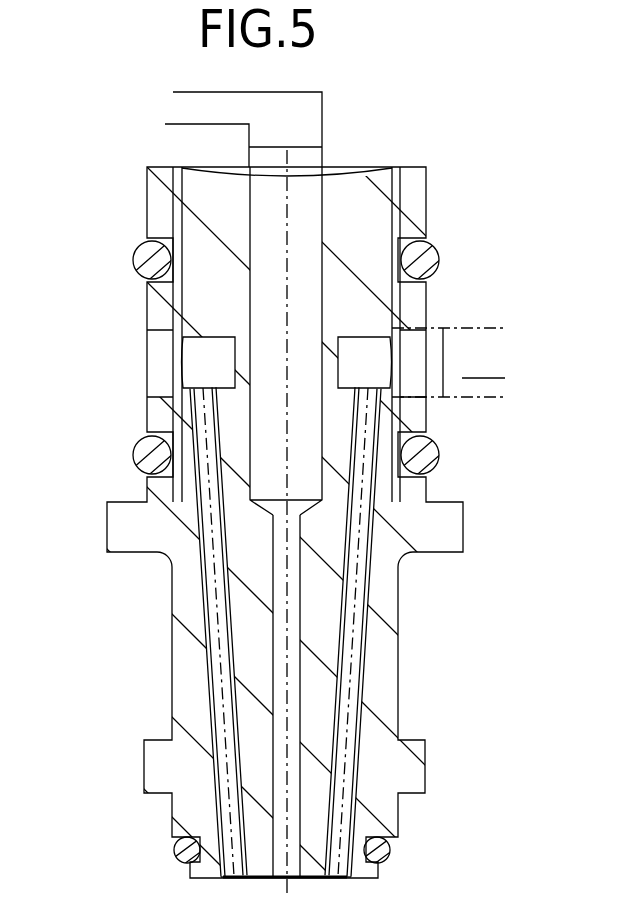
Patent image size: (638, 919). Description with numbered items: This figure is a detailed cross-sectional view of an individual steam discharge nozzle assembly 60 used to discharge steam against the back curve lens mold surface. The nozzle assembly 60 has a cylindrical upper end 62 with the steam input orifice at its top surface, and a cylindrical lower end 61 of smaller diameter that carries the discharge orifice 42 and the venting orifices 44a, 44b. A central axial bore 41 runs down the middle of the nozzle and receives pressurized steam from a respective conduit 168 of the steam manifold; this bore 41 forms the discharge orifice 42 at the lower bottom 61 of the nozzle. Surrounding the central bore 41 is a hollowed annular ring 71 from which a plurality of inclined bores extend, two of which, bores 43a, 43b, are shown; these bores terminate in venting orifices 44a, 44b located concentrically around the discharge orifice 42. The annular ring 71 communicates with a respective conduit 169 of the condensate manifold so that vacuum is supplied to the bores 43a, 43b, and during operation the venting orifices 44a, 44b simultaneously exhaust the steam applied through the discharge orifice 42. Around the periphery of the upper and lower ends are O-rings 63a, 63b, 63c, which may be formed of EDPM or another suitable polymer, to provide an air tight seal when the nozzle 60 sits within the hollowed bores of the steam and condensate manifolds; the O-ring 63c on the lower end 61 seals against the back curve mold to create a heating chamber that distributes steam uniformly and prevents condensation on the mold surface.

The nozzle assembly 60 is at (500, 266).
The cylindrical lower end 61 is at (390, 858).
The cylindrical upper end 62 is at (147, 210).
The O-ring 63a is at (142, 268).
The O-ring 63b is at (143, 446).
The O-ring 63c is at (176, 858).
The hollowed annular ring 71 is at (160, 360).
The central axial bore 41 is at (326, 212).
The discharge orifice 42 is at (289, 884).
The bore 43a is at (217, 578).
The bore 43b is at (357, 612).
The venting orifice 44a is at (232, 877).
The venting orifice 44b is at (343, 877).
The conduit 168 is at (300, 123).
The conduit 169 is at (450, 362).